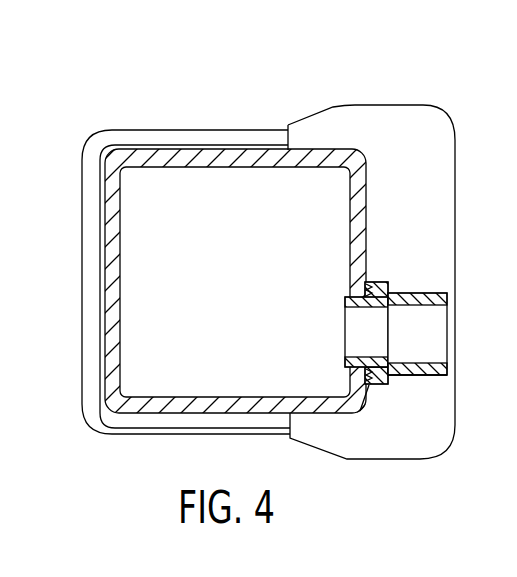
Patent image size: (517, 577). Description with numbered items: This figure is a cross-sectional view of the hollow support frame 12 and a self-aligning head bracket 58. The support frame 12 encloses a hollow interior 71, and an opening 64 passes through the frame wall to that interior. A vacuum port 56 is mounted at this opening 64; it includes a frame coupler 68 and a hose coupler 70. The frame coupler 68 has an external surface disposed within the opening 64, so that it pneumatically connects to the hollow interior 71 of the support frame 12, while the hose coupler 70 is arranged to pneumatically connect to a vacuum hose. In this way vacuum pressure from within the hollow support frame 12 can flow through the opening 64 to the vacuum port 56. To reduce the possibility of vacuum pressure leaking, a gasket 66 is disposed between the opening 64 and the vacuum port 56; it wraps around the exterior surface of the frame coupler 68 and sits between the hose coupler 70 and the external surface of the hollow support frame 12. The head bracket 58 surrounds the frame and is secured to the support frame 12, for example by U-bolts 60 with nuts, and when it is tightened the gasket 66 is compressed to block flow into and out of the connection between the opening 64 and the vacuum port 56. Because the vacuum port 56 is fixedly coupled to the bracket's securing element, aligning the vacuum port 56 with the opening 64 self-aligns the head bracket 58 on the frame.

The hollow support frame 12 is at (322, 167).
The vacuum port 56 is at (409, 377).
The head bracket 58 is at (442, 117).
The U-bolts 60 is at (95, 139).
The opening 64 is at (343, 329).
The gasket 66 is at (372, 384).
The frame coupler 68 is at (365, 291).
The hose coupler 70 is at (426, 290).
The hollow interior 71 is at (181, 203).